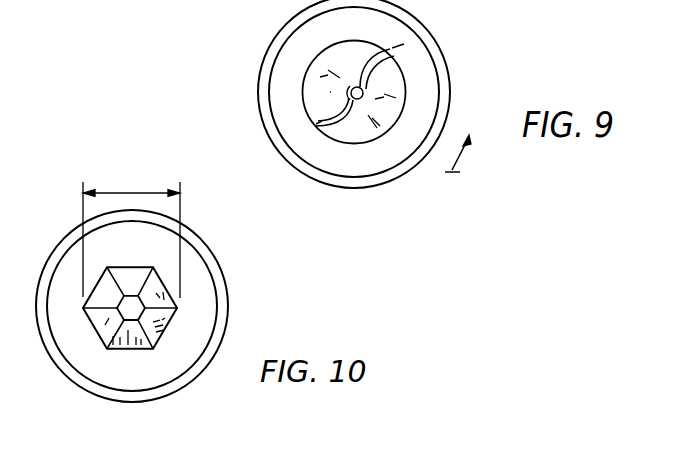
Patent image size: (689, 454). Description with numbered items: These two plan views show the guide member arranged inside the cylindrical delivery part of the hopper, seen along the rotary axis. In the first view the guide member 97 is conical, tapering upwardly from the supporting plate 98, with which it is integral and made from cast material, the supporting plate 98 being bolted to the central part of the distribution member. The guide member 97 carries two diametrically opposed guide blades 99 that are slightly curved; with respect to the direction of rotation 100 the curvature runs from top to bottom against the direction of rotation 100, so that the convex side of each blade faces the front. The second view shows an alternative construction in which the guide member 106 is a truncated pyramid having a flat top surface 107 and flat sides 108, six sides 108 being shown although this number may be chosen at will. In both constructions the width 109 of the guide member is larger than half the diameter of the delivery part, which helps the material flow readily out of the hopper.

In FIG. 9, the guide member 97 is at (358, 114).
In FIG. 9, the supporting plate 98 is at (441, 86).
In FIG. 10, the supporting plate 98 is at (216, 292).
In FIG. 9, the guide blades 99 is at (388, 49).
In FIG. 9, the direction of rotation 100 is at (476, 160).
In FIG. 10, the guide member 106 is at (152, 331).
In FIG. 10, the flat top surface 107 is at (133, 319).
In FIG. 10, the flat sides 108 is at (141, 268).
In FIG. 10, the width 109 is at (139, 192).